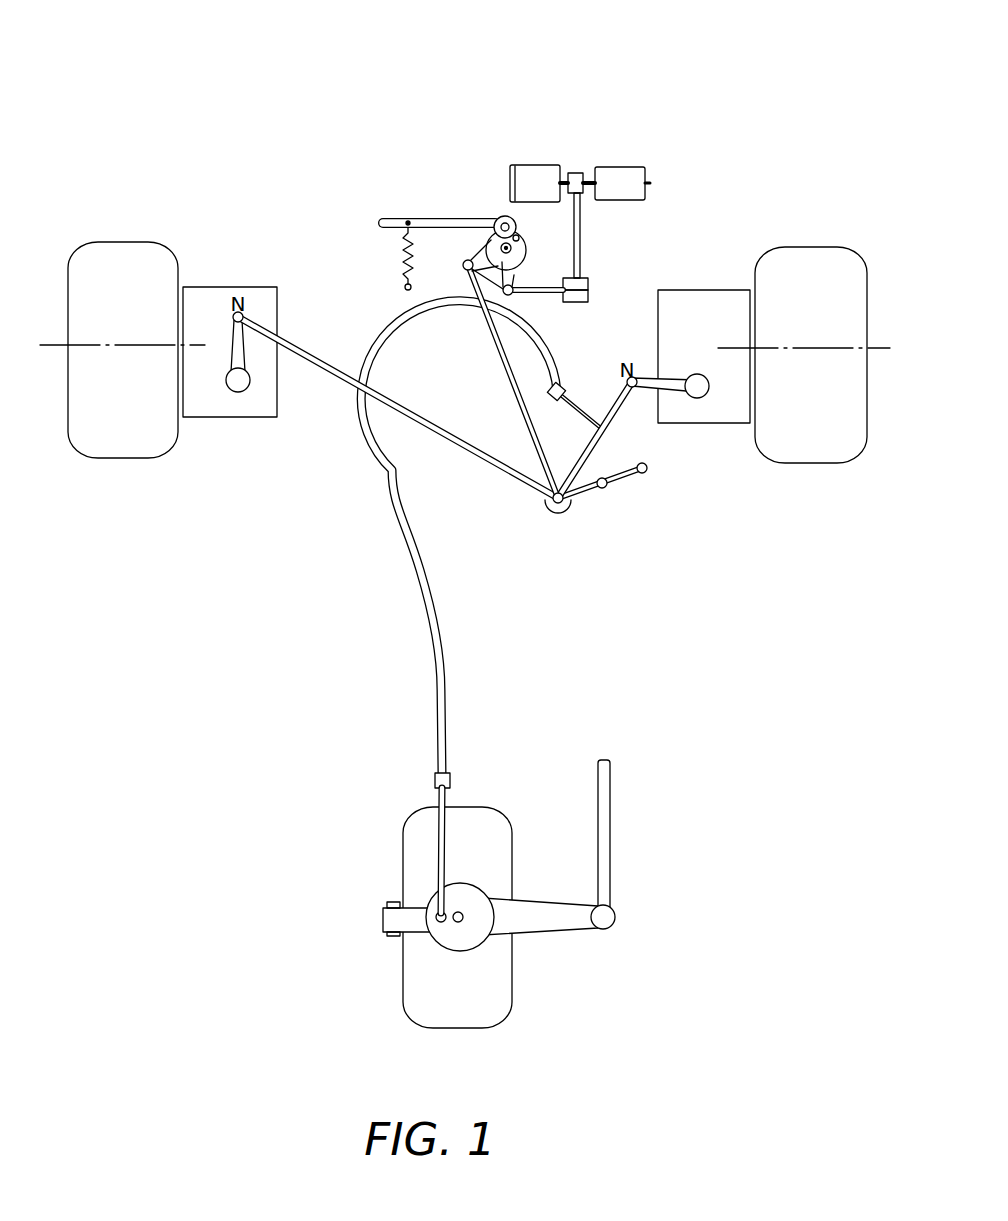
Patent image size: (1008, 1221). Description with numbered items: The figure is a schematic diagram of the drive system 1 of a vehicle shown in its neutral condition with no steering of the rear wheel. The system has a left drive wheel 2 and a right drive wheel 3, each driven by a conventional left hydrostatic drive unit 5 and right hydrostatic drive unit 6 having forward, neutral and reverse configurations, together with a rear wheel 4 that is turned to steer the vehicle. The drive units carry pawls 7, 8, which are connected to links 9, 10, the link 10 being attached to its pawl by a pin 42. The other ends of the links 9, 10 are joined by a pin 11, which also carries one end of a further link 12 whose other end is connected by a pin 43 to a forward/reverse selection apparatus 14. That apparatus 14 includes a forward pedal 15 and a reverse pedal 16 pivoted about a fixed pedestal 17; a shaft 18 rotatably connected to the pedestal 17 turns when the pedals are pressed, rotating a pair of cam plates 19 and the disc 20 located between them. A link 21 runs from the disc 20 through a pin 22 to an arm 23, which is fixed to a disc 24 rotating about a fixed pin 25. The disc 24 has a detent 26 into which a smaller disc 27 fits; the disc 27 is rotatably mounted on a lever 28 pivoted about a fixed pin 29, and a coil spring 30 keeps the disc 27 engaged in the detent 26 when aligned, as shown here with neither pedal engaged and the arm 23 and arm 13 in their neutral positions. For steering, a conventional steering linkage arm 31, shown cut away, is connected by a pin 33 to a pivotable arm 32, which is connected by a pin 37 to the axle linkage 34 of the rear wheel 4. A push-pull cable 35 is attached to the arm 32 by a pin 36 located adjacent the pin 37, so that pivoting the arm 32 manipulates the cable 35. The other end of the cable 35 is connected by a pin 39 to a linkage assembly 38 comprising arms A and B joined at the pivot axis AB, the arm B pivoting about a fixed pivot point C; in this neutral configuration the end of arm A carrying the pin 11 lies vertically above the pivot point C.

The drive system 1 is at (803, 63).
The left drive wheel 2 is at (122, 240).
The right drive wheel 3 is at (810, 246).
The rear wheel 4 is at (405, 1003).
The left hydrostatic drive unit 5 is at (228, 418).
The right hydrostatic drive unit 6 is at (722, 424).
The pawl 7 is at (232, 355).
The pawl 8 is at (678, 378).
The link 9 is at (335, 362).
The link 10 is at (622, 412).
The pin 11 is at (573, 508).
The link 12 is at (500, 275).
The arm 13 is at (480, 232).
The forward/reverse selection apparatus 14 is at (585, 117).
The forward pedal 15 is at (660, 180).
The reverse pedal 16 is at (507, 175).
The fixed pedestal 17 is at (572, 170).
The shaft 18 is at (585, 245).
The cam plates 19 is at (590, 288).
The disc 20 is at (580, 300).
The link 21 is at (540, 295).
The pin 22 is at (493, 315).
The arm 23 is at (520, 288).
The disc 24 is at (485, 224).
The fixed pin 25 is at (485, 278).
The detent 26 is at (518, 243).
The disc 27 is at (517, 168).
The lever 28 is at (418, 220).
The fixed pin 29 is at (380, 225).
The coil spring 30 is at (405, 265).
The steering linkage arm 31 is at (613, 840).
The pivotable arm 32 is at (547, 933).
The pin 33 is at (615, 918).
The axle linkage 34 is at (382, 918).
The push-pull cable 35 is at (405, 525).
The pin 36 is at (433, 938).
The pin 37 is at (465, 913).
The linkage assembly 38 is at (648, 530).
The pin 39 is at (646, 470).
The pin 42 is at (633, 373).
The pin 43 is at (463, 264).
The pivot axis AB is at (603, 490).
The fixed pivot point C is at (553, 508).